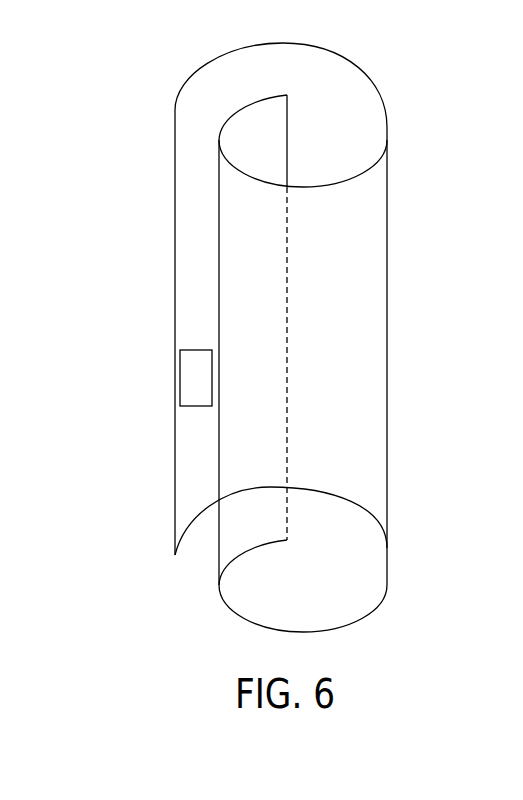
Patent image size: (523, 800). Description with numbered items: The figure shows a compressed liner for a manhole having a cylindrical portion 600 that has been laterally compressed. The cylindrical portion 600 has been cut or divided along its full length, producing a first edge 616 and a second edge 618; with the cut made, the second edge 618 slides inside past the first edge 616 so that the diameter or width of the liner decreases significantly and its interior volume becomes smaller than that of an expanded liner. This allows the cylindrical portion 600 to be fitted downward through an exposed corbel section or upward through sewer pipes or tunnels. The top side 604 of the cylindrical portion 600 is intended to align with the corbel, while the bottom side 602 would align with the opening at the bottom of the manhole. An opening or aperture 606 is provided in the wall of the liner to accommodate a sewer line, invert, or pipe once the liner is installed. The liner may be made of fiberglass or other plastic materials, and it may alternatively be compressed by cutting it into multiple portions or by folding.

The cylindrical portion 600 is at (124, 251).
The bottom side 602 is at (257, 608).
The top side 604 is at (365, 105).
The opening or aperture 606 is at (190, 378).
The first edge 616 is at (175, 482).
The second edge 618 is at (287, 158).